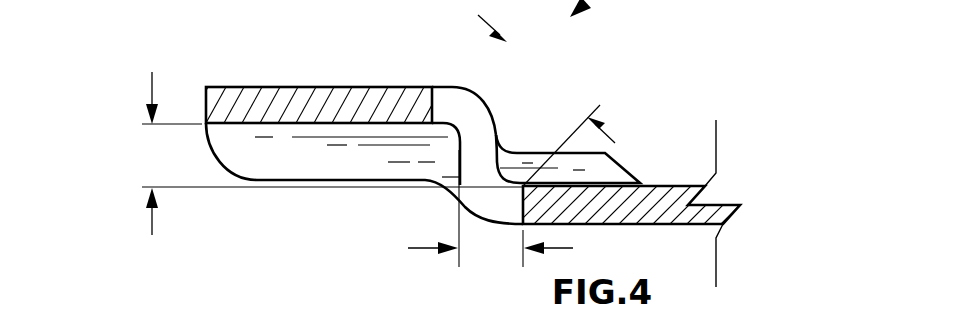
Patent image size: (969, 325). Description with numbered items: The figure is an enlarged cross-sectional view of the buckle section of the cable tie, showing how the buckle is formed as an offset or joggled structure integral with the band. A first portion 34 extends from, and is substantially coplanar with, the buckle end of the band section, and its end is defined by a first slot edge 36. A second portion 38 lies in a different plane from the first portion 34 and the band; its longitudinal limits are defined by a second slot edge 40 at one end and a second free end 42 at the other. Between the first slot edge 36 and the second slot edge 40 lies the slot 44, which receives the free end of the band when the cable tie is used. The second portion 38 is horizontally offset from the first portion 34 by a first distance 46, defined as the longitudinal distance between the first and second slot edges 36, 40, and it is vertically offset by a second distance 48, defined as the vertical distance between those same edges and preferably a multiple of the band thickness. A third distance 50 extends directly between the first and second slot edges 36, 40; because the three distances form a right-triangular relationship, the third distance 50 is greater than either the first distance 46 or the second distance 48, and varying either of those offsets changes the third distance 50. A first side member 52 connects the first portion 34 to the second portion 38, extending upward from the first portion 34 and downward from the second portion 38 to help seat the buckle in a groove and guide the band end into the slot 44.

The first portion 34 is at (653, 223).
The first slot edge 36 is at (525, 187).
The second portion 38 is at (312, 88).
The second slot edge 40 is at (520, 28).
The second free end 42 is at (205, 100).
The slot 44 is at (478, 163).
The first distance 46 is at (491, 250).
The second distance 48 is at (152, 157).
The third distance 50 is at (545, 82).
The first side member 52 is at (292, 168).